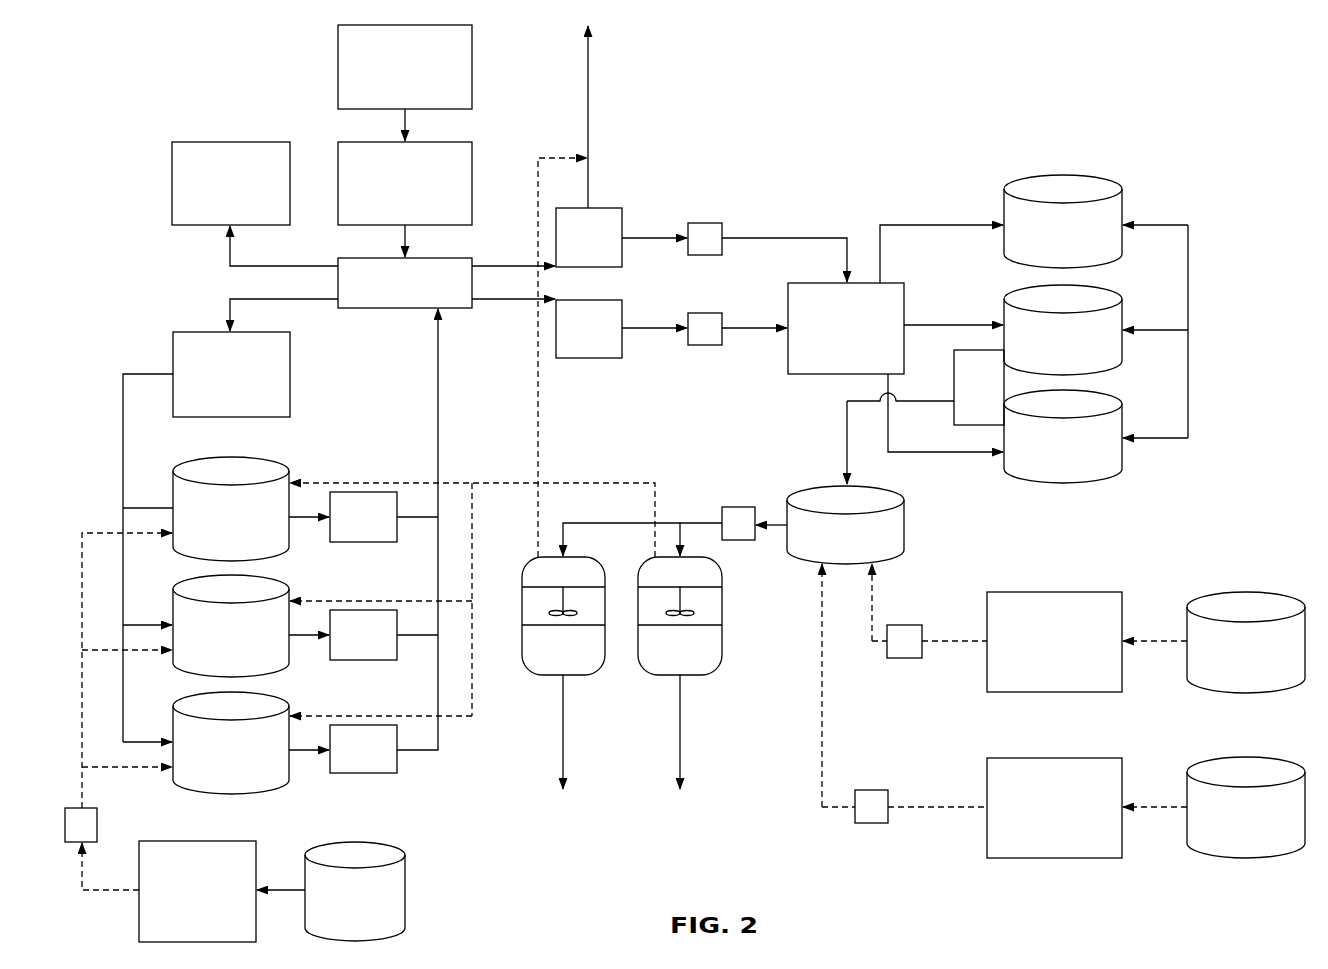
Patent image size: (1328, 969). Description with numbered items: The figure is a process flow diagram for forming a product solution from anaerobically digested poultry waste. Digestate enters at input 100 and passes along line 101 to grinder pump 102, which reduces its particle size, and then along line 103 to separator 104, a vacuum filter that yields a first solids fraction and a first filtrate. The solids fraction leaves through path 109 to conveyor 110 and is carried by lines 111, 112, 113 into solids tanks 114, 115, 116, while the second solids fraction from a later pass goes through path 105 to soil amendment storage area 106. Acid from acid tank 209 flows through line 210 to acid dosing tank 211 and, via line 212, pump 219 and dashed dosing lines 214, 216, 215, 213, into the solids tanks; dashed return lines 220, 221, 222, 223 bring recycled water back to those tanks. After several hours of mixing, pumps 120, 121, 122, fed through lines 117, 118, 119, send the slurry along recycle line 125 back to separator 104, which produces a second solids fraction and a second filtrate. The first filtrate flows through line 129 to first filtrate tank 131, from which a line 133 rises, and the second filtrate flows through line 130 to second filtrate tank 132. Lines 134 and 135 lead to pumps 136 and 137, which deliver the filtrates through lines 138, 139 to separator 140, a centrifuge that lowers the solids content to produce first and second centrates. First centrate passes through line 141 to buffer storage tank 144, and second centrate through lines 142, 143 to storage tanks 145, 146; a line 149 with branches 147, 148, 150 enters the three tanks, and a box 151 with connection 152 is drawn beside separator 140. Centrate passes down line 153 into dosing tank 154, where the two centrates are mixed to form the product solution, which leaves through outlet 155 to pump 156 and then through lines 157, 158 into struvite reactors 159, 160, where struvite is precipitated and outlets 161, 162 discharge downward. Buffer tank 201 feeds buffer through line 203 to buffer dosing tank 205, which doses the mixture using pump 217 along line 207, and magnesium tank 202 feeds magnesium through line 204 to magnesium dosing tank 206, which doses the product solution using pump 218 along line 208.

The input 100 is at (405, 67).
The feed stream 101 is at (424, 125).
The grinder pump 102 is at (405, 183).
The pretreated stream 103 is at (424, 240).
The separator 104 is at (405, 283).
The stream to unit 106 105 is at (284, 246).
The soil amendment storage area 106 is at (231, 183).
The stream to unit 110 109 is at (284, 302).
The conveyor 110 is at (231, 374).
The feed line to tank 114 111 is at (148, 496).
The feed line to tank 115 112 is at (147, 611).
The feed line to tank 116 113 is at (147, 727).
The solids tank 114 is at (231, 509).
The solids tank 115 is at (231, 626).
The solids tank 116 is at (231, 743).
The outlet line from tank 114 117 is at (309, 503).
The outlet line from tank 115 118 is at (309, 620).
The outlet line from tank 116 119 is at (309, 735).
The pump 120 is at (363, 517).
The pump 121 is at (363, 635).
The pump 122 is at (363, 749).
The recycle line 125 is at (417, 529).
The stream to unit 131 129 is at (513, 255).
The stream to unit 132 130 is at (513, 286).
The first filtrate tank 131 is at (589, 237).
The second filtrate tank 132 is at (589, 329).
The vent stream 133 is at (582, 291).
The stream to valve 136 134 is at (654, 226).
The stream to valve 137 135 is at (654, 316).
The pump 136 is at (705, 225).
The pump 137 is at (705, 316).
The stream to unit 140 138 is at (784, 248).
The stream to unit 140 139 is at (754, 316).
The separator 140 is at (846, 328).
The stream to tank 144 141 is at (941, 241).
The stream to tank 145 142 is at (953, 313).
The stream to tank 146 143 is at (945, 413).
The buffer storage tank 144 is at (1063, 221).
The storage tank 145 is at (1063, 330).
The storage tank 146 is at (1063, 436).
The inlet line to tank 144 147 is at (1155, 212).
The inlet line to tank 145 148 is at (1155, 317).
The supply line 149 is at (1207, 331).
The inlet line to tank 146 150 is at (1155, 425).
The controller 151 is at (979, 387).
The control line 152 is at (921, 408).
The stream to tank 154 153 is at (829, 442).
The dosing tank 154 is at (845, 525).
The outlet stream 155 is at (772, 541).
The pump 156 is at (738, 523).
The stream to reactor 159 157 is at (699, 539).
The struvite reactor 158 is at (642, 539).
The struvite reactor 159 is at (680, 616).
The struvite reactor 160 is at (563, 616).
The product stream 161 is at (699, 732).
The product stream 162 is at (582, 732).
The buffer tank 201 is at (1246, 642).
The magnesium tank 202 is at (1246, 807).
The chemical feed line 203 is at (1155, 628).
The chemical feed line 204 is at (1155, 794).
The buffer dosing tank 205 is at (1054, 642).
The magnesium dosing tank 206 is at (1054, 808).
The dosing line 207 is at (929, 602).
The dosing line 208 is at (904, 685).
The acid tank 209 is at (355, 891).
The chemical feed line 210 is at (281, 878).
The acid dosing tank 211 is at (197, 891).
The dosing line 212 is at (110, 867).
The dosing line to tank 116 213 is at (127, 755).
The dosing distribution line 214 is at (63, 696).
The dosing line to tank 115 215 is at (127, 638).
The dosing line to tank 114 216 is at (110, 670).
The pump 217 is at (904, 653).
The pump 218 is at (872, 819).
The pump 219 is at (99, 825).
The return line to tank 114 220 is at (472, 508).
The return manifold 221 is at (490, 599).
The return line to tank 115 222 is at (381, 588).
The return line to tank 116 223 is at (399, 682).